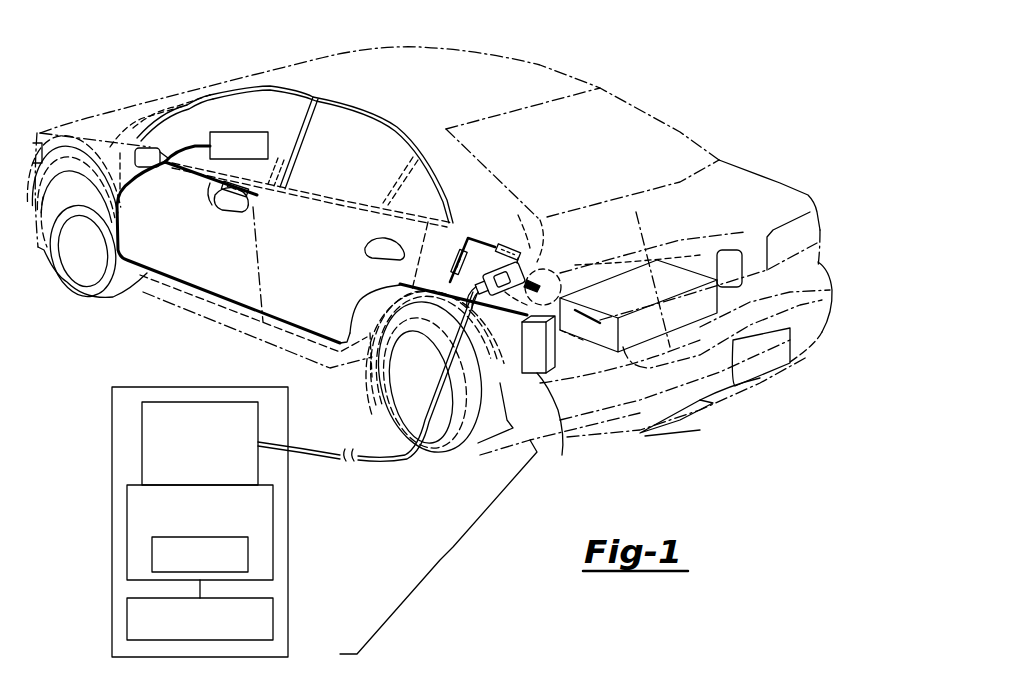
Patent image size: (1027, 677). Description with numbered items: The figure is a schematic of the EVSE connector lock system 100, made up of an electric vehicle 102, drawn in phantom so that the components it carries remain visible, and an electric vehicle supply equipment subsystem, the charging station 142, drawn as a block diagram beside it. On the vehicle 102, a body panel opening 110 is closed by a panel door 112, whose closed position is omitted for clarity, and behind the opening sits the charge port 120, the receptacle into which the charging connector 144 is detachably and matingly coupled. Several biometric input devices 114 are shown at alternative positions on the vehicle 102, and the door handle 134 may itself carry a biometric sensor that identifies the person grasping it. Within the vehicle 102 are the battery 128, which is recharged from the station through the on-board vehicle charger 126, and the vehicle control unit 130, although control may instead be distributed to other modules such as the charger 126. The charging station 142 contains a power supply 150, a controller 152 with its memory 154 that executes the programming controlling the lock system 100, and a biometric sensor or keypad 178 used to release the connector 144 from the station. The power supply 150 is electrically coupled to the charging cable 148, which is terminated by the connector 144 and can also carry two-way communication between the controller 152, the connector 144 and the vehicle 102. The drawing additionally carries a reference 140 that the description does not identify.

The EVSE connector lock system 100 is at (517, 50).
The electric vehicle 102 is at (604, 88).
The body panel opening 110 is at (532, 222).
The panel door 112 is at (600, 297).
The biometric input device 114 is at (282, 170).
The charge port 120 is at (538, 266).
The on-board vehicle charger 126 is at (556, 425).
The electrical energy storage device 128 is at (707, 280).
The vehicle control unit 130 is at (240, 132).
The door handle 134 is at (233, 213).
The ground 140 is at (440, 560).
The electrical charging station 142 is at (112, 517).
The charging connector 144 is at (498, 290).
The charging cable 148 is at (395, 457).
The power supply 150 is at (141, 442).
The controller 152 is at (273, 532).
The memory 154 is at (150, 551).
The biometric sensor/keypad 178 is at (127, 618).